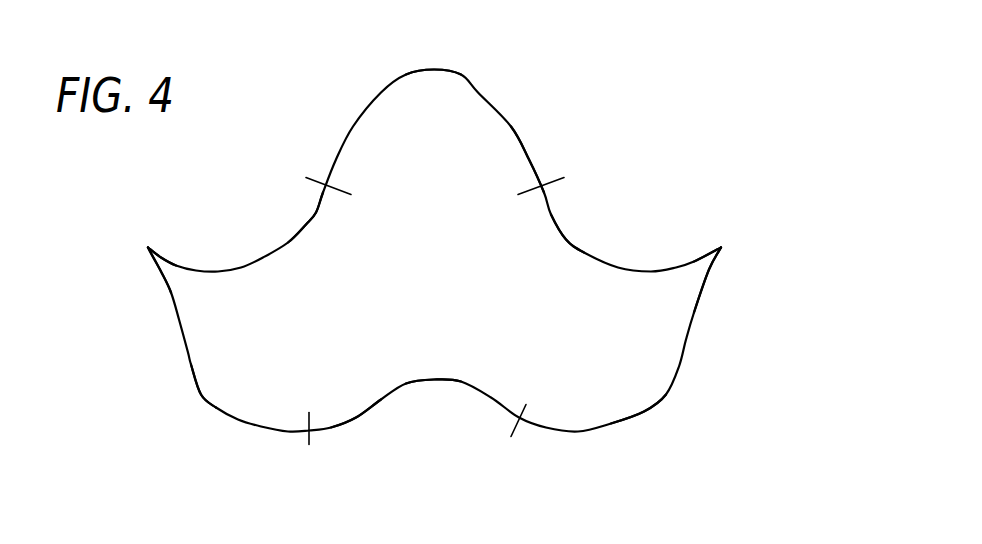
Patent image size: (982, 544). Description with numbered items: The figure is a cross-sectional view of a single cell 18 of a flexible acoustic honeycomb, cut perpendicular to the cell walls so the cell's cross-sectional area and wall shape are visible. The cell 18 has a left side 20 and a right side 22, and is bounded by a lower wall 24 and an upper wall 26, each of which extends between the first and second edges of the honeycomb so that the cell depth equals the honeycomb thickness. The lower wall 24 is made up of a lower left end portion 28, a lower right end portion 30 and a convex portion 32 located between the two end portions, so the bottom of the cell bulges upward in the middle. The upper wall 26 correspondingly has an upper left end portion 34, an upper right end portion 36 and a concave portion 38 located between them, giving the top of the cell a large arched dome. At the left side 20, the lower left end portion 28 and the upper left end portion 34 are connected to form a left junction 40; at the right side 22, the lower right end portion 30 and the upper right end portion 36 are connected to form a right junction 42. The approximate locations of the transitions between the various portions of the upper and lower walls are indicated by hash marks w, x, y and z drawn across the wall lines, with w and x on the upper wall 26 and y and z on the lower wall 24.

The cell 18 is at (434, 251).
The left side 20 is at (137, 275).
The right side 22 is at (733, 285).
The lower wall 24 is at (355, 418).
The upper wall 26 is at (533, 162).
The lower left end portion 28 is at (207, 402).
The lower right end portion 30 is at (643, 412).
The convex portion 32 is at (433, 377).
The upper left end portion 34 is at (322, 198).
The upper right end portion 36 is at (550, 212).
The concave portion 38 is at (432, 64).
The left junction 40 is at (147, 248).
The right junction 42 is at (720, 248).
The hash mark w is at (340, 190).
The hash mark x is at (530, 189).
The hash mark y is at (513, 430).
The hash mark z is at (308, 418).